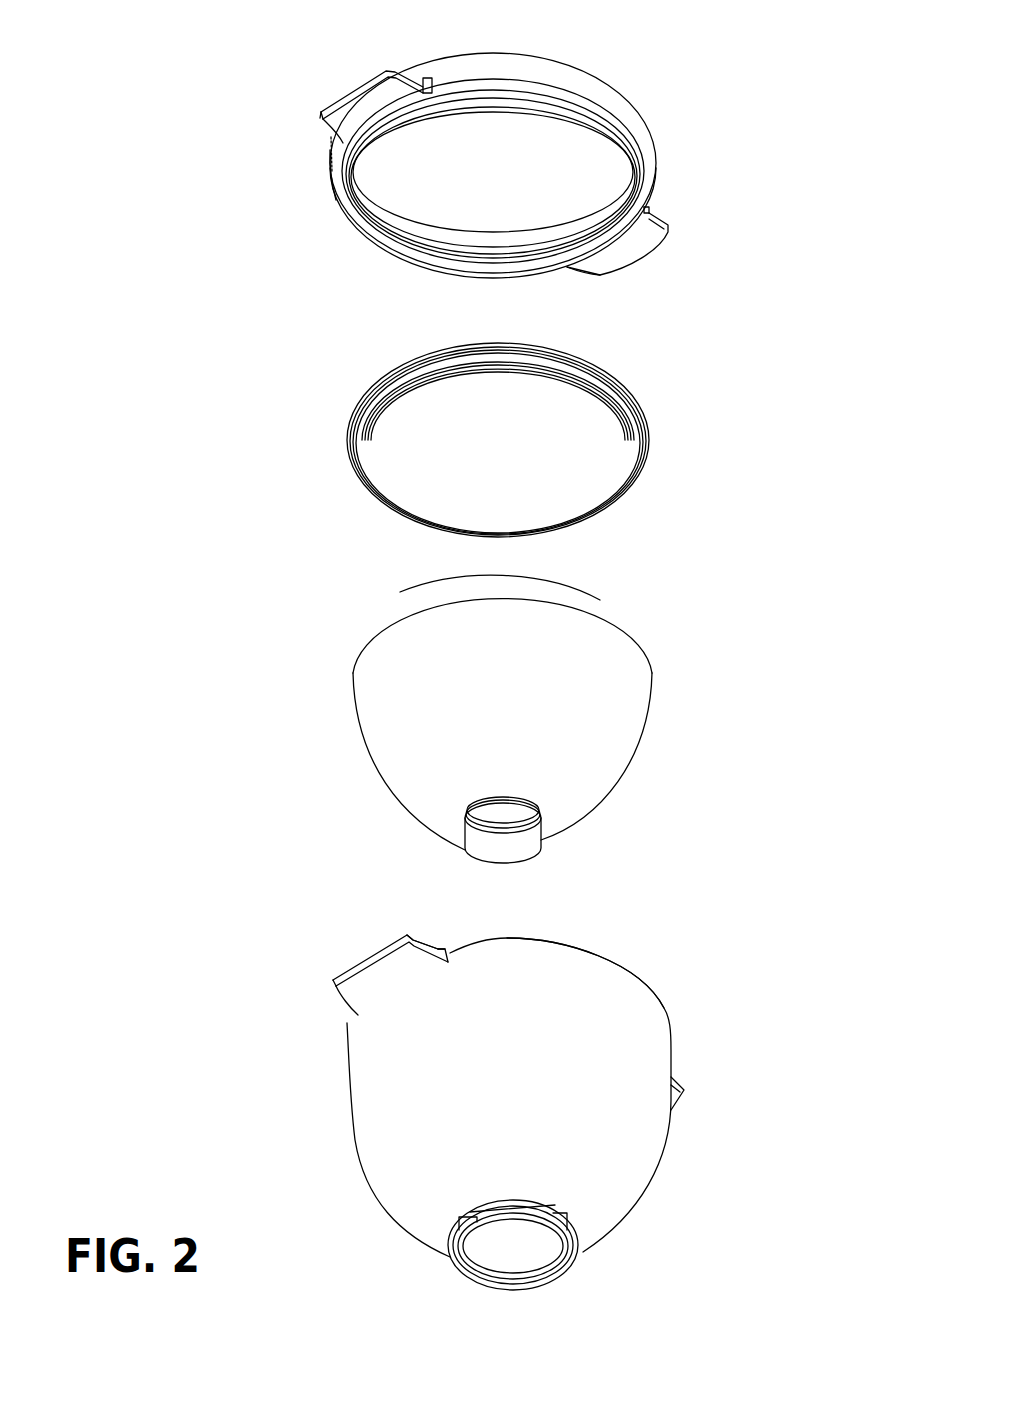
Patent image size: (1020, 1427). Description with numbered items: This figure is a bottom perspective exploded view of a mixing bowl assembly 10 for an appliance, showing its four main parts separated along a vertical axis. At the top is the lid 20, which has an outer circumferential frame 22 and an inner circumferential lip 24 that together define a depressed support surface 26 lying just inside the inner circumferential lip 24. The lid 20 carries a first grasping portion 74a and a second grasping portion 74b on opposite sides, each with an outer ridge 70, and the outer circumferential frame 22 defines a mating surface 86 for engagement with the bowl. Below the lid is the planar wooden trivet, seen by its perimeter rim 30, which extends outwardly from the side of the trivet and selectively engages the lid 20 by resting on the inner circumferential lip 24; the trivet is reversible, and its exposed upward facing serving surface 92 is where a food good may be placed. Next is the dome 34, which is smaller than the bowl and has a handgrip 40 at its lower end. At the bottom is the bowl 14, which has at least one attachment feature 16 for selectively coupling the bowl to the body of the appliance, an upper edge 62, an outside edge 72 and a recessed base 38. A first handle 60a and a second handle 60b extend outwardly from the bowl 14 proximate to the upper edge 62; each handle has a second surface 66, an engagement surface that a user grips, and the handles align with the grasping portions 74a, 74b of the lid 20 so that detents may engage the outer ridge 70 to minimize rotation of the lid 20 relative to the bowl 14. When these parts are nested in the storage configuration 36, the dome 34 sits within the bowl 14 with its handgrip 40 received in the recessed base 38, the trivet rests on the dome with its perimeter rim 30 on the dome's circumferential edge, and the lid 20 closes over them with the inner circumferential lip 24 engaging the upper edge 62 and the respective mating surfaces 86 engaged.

The mixing bowl assembly 10 is at (120, 112).
The bowl 14 is at (633, 1035).
The attachment feature 16 is at (393, 370).
The lid 20 is at (520, 52).
The outer circumferential frame 22 is at (330, 170).
The inner circumferential lip 24 is at (612, 128).
The depressed support surface 26 is at (423, 185).
The perimeter rim 30 is at (460, 353).
The dome 34 is at (430, 695).
The storage configuration 36 is at (820, 210).
The base 38 is at (593, 605).
The handgrip 40 is at (525, 837).
The first handle 60a is at (405, 935).
The second handle 60b is at (682, 1090).
The upper edge 62 is at (573, 943).
The second surface 66 is at (397, 92).
The outer ridge 70 is at (322, 120).
The outside edge 72 is at (367, 952).
The first grasping portion 74a is at (379, 72).
The second grasping portion 74b is at (660, 213).
The mating surface 86 is at (483, 82).
The serving surface 92 is at (588, 435).